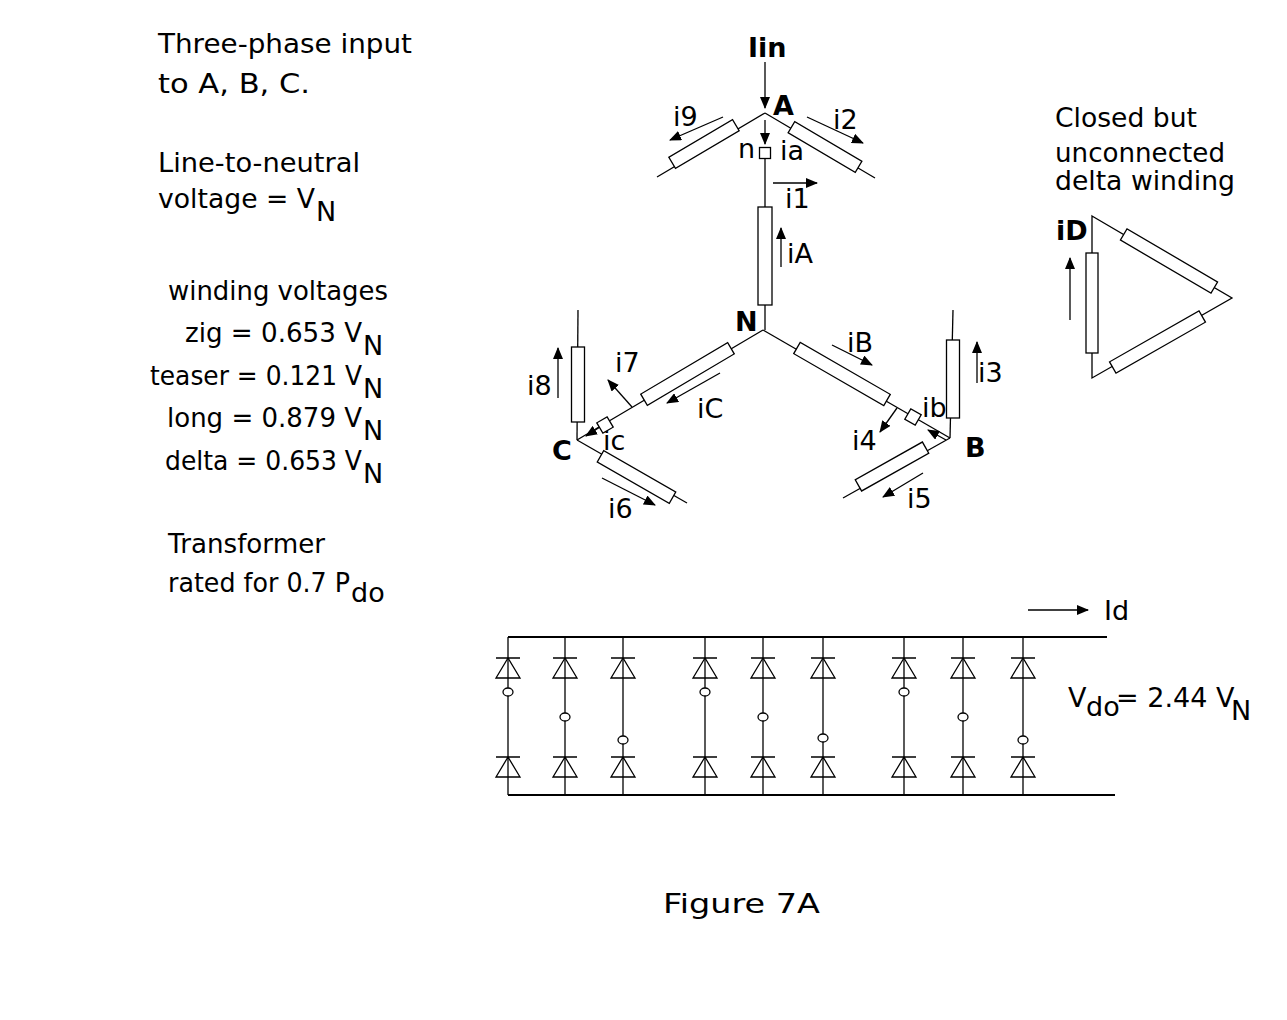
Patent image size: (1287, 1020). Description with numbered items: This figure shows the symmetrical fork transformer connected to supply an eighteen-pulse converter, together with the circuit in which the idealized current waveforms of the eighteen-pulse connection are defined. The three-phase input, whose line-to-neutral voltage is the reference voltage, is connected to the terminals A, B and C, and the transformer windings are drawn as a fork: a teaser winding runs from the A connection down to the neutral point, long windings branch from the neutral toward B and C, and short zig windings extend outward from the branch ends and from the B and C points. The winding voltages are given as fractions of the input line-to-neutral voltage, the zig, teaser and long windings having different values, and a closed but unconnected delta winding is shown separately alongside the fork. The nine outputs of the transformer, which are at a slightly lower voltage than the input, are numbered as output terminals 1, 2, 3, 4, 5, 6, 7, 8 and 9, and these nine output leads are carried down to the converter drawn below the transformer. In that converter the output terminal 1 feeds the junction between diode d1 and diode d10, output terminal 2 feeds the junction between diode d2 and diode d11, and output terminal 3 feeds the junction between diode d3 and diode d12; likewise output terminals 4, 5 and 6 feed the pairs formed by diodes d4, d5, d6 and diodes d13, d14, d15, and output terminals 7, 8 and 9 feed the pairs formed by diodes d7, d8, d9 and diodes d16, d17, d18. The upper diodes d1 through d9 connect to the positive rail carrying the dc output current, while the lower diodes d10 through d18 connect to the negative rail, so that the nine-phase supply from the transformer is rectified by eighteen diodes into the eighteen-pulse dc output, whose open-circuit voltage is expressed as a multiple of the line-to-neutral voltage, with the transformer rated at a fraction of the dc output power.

The output terminal 1 is at (620, 420).
The output terminal 2 is at (708, 415).
The output terminal 3 is at (773, 508).
The output terminal 4 is at (807, 511).
The output terminal 5 is at (834, 577).
The output terminal 6 is at (697, 589).
The output terminal 7 is at (738, 511).
The output terminal 8 is at (765, 495).
The output terminal 9 is at (827, 426).
The diode d1 is at (495, 664).
The diode d2 is at (552, 664).
The diode d3 is at (610, 664).
The diode d4 is at (692, 664).
The diode d5 is at (750, 664).
The diode d6 is at (810, 664).
The diode d7 is at (891, 664).
The diode d8 is at (950, 664).
The diode d9 is at (1010, 664).
The diode d10 is at (492, 776).
The diode d11 is at (549, 776).
The diode d12 is at (607, 776).
The diode d13 is at (689, 776).
The diode d14 is at (747, 776).
The diode d15 is at (807, 776).
The diode d16 is at (888, 776).
The diode d17 is at (947, 776).
The diode d18 is at (1007, 776).